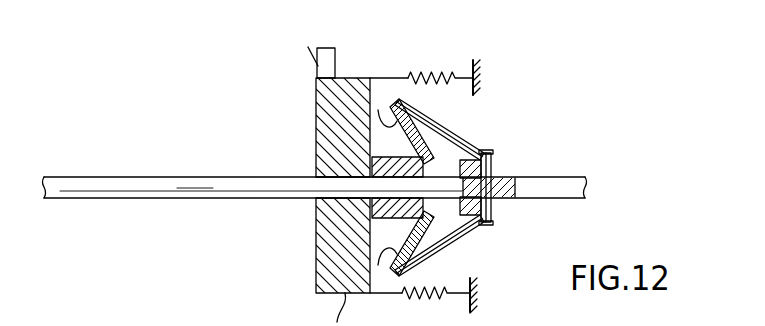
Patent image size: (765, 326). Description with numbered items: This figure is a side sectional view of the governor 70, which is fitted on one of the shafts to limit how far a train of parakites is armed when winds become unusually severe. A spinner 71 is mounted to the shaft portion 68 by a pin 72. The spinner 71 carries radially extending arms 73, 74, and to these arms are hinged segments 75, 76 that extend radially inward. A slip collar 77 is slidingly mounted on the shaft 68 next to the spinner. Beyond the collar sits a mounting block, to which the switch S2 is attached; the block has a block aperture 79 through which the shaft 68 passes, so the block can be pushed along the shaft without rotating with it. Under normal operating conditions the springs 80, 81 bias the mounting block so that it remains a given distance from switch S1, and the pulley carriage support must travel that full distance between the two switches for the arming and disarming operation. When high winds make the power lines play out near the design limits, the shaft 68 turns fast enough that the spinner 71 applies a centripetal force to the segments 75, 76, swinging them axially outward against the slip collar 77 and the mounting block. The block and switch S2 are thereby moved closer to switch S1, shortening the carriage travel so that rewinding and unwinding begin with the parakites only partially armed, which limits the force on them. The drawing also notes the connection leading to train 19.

The shaft portion 68 is at (172, 177).
The governor 70 is at (312, 256).
The spinner 71 is at (463, 145).
The pin 72 is at (492, 169).
The radially extending arm 73 is at (437, 113).
The radially extending arm 74 is at (445, 240).
The segment 75 is at (378, 110).
The segment 76 is at (378, 265).
The slip collar 77 is at (368, 200).
The block aperture 79 is at (311, 176).
The spring 80 is at (432, 64).
The spring 81 is at (433, 288).
The switch S2 is at (333, 63).
The train 19 connection 19 is at (200, 325).